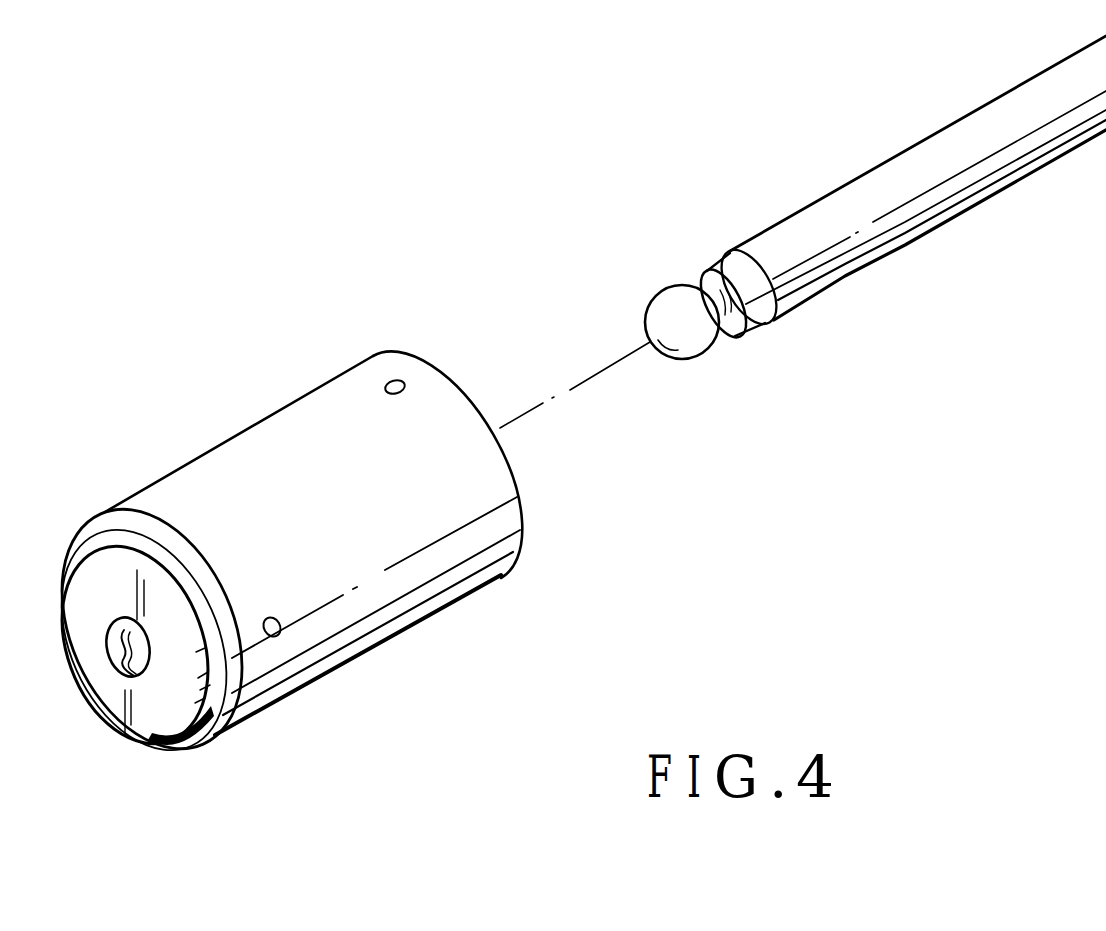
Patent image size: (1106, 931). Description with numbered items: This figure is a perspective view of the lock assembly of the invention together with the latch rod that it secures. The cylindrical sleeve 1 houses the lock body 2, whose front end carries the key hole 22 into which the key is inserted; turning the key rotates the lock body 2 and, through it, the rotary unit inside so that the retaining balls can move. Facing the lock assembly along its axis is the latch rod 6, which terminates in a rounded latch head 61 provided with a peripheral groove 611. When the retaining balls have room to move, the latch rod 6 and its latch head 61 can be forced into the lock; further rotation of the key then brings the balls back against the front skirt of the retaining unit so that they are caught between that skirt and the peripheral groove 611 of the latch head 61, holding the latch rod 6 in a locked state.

The sleeve 1 is at (420, 593).
The lock body 2 is at (172, 718).
The key hole 22 is at (135, 678).
The latch rod 6 is at (1002, 163).
The latch head 61 is at (740, 350).
The peripheral groove 611 is at (712, 283).